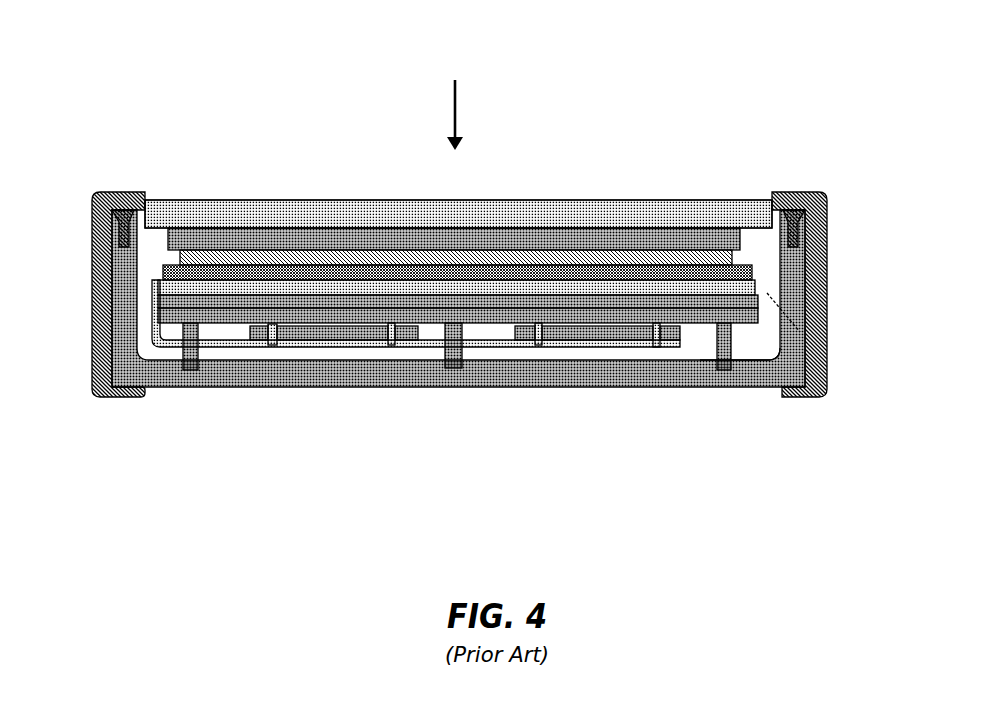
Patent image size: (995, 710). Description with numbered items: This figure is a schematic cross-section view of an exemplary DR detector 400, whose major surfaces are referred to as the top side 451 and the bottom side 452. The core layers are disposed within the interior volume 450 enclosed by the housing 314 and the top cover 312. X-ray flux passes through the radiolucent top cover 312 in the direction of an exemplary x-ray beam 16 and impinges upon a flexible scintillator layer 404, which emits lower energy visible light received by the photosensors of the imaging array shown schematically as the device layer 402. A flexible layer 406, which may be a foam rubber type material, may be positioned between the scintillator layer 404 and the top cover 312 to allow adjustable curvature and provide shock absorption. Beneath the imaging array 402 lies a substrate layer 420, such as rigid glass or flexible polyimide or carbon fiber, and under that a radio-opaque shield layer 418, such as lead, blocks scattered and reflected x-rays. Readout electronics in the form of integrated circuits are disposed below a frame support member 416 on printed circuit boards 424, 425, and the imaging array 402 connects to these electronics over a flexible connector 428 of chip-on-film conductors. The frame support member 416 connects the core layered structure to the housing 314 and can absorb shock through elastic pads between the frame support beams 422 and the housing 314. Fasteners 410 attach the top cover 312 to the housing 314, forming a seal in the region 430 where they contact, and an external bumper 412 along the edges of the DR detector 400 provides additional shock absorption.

The DR detector 400 is at (109, 113).
The x-ray beam 16 is at (450, 108).
The top side 451 is at (281, 101).
The bottom side 452 is at (273, 532).
The fasteners 410 is at (92, 233).
The interior volume 450 is at (827, 343).
The external bumper 412 is at (826, 293).
The region 430 is at (143, 227).
The device layer 402 is at (492, 242).
The top cover 312 is at (720, 218).
The scintillator layer 404 is at (562, 242).
The flexible layer 406 is at (638, 242).
The substrate layer 420 is at (535, 290).
The radio-opaque shield layer 418 is at (573, 300).
The flexible connector 428 is at (158, 347).
The printed circuit board 424 is at (303, 347).
The printed circuit board 425 is at (550, 348).
The frame support member 416 is at (645, 347).
The frame support beams 422 is at (191, 370).
The housing 314 is at (763, 347).